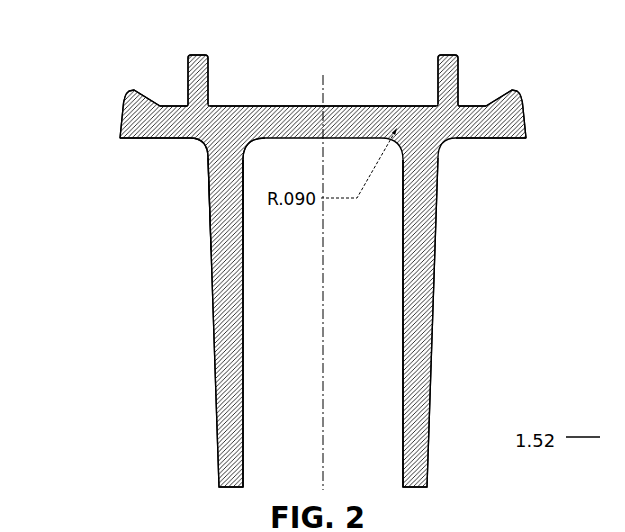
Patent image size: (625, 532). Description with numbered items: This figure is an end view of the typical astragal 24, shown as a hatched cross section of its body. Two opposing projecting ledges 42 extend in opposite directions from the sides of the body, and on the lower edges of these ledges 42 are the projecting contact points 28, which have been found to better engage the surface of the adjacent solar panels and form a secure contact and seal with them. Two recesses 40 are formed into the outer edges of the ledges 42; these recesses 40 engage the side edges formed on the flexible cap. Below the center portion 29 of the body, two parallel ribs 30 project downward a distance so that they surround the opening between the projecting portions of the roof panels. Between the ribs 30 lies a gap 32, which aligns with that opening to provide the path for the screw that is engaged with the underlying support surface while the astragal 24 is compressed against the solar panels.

The astragal 24 is at (202, 168).
The projecting contact points 28 is at (507, 140).
The center portion 29 is at (278, 117).
The ribs 30 is at (227, 390).
The gap 32 is at (373, 332).
The recesses 40 is at (122, 115).
The projecting ledges 42 is at (166, 112).